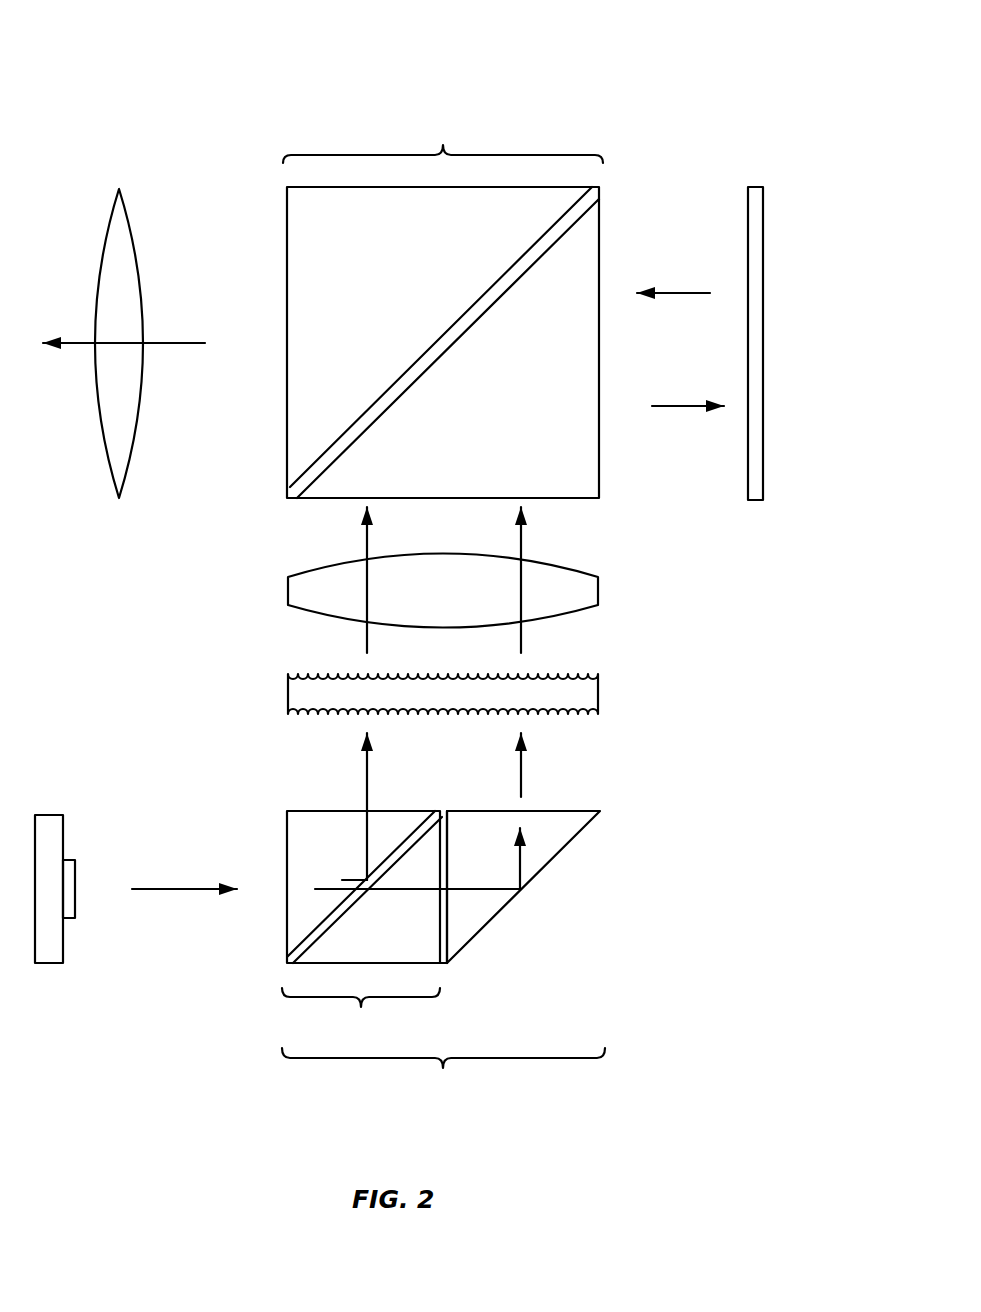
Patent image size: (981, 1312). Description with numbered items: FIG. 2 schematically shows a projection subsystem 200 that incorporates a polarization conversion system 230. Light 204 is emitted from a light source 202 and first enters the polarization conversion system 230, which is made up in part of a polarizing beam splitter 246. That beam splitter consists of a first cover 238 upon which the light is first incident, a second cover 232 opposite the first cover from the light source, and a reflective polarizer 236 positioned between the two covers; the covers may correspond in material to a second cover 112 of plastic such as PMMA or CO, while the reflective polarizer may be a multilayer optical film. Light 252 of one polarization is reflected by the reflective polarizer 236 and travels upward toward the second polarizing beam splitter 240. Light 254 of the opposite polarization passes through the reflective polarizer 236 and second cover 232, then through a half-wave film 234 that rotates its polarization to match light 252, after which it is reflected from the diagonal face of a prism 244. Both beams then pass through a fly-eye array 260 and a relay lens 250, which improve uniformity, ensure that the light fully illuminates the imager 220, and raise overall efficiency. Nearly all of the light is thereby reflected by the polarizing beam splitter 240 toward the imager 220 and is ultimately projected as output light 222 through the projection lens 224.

The projection subsystem 200 is at (164, 56).
The projection lens 224 is at (108, 228).
The output light 222 is at (75, 343).
The second cover 112 is at (303, 440).
The polarizing beam splitter 240 is at (443, 135).
The imager 220 is at (758, 355).
The light of one polarization 252 is at (367, 543).
The light of the opposite polarization 254 is at (521, 545).
The relay lens 250 is at (596, 592).
The fly-eye array 260 is at (596, 693).
The light source 202 is at (70, 860).
The light 204 is at (183, 887).
The first cover 238 is at (297, 915).
The reflective polarizer 236 is at (287, 963).
The half-wave film 234 is at (447, 963).
The second cover 232 is at (415, 952).
The prism 244 is at (550, 842).
The polarizing beam splitter 246 is at (361, 1015).
The polarization conversion system 230 is at (443, 1075).